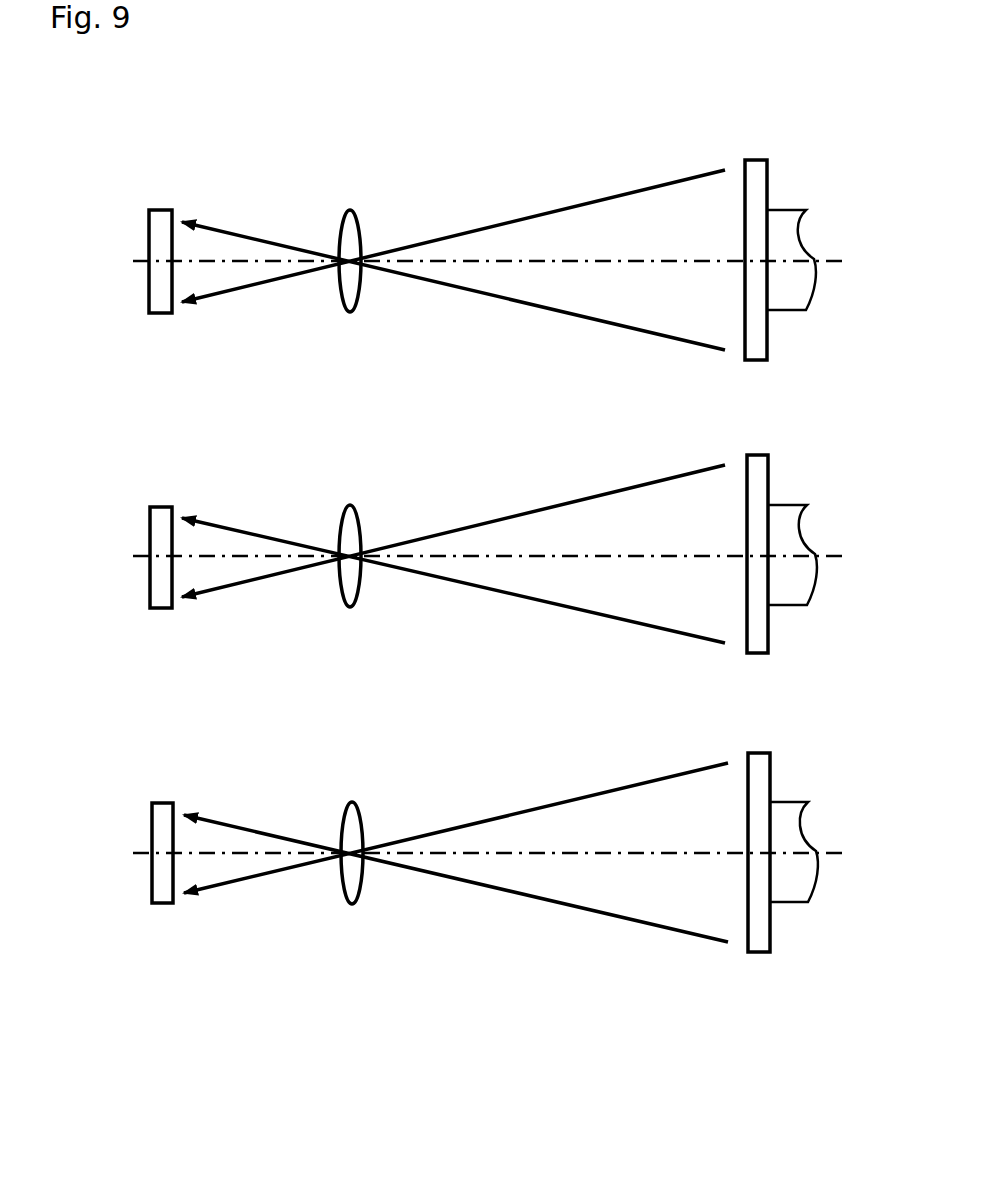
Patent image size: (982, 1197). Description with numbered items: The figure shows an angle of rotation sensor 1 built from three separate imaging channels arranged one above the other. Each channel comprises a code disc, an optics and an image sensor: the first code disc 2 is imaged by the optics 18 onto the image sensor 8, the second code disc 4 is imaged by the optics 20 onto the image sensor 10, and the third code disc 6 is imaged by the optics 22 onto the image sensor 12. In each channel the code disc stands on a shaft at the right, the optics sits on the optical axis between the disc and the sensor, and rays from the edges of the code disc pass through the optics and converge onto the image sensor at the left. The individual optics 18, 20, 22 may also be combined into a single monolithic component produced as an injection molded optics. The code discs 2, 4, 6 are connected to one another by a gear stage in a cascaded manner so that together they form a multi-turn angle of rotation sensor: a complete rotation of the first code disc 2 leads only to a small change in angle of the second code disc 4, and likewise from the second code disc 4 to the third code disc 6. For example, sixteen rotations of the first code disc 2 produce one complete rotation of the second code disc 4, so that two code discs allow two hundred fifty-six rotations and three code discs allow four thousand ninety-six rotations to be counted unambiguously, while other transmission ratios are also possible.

The angle of rotation sensor 1 is at (562, 77).
The first code disc 2 is at (757, 318).
The second code disc 4 is at (760, 632).
The third code disc 6 is at (762, 930).
The image sensor 8 is at (162, 293).
The image sensor 10 is at (162, 592).
The image sensor 12 is at (165, 890).
The optics 18 is at (350, 277).
The optics 20 is at (350, 578).
The optics 22 is at (352, 875).